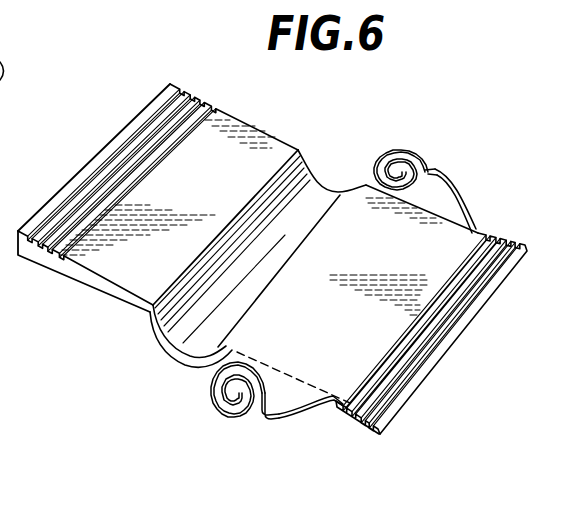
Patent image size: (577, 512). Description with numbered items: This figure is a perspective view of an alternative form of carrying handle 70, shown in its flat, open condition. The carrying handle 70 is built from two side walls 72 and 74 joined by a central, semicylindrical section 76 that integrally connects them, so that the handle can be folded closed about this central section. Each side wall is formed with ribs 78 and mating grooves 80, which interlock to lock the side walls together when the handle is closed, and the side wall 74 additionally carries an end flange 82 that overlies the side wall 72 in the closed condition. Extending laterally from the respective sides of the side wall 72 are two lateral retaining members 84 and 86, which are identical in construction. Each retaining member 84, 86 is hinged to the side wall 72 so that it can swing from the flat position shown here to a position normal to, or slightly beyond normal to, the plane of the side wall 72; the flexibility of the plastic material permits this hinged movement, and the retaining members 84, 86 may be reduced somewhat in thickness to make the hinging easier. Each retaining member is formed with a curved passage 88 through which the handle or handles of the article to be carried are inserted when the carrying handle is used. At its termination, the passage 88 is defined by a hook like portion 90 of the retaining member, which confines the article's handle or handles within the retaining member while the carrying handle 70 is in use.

The carrying handle 70 is at (281, 143).
The side wall 72 is at (437, 240).
The side wall 74 is at (117, 277).
The central semicylindrical section 76 is at (160, 340).
The ribs 78 is at (39, 268).
The mating grooves 80 is at (368, 430).
The end flange 82 is at (84, 172).
The lateral retaining member 84 is at (437, 193).
The lateral retaining member 86 is at (288, 408).
The curved passage 88 is at (428, 172).
The hook like portion 90 is at (392, 163).